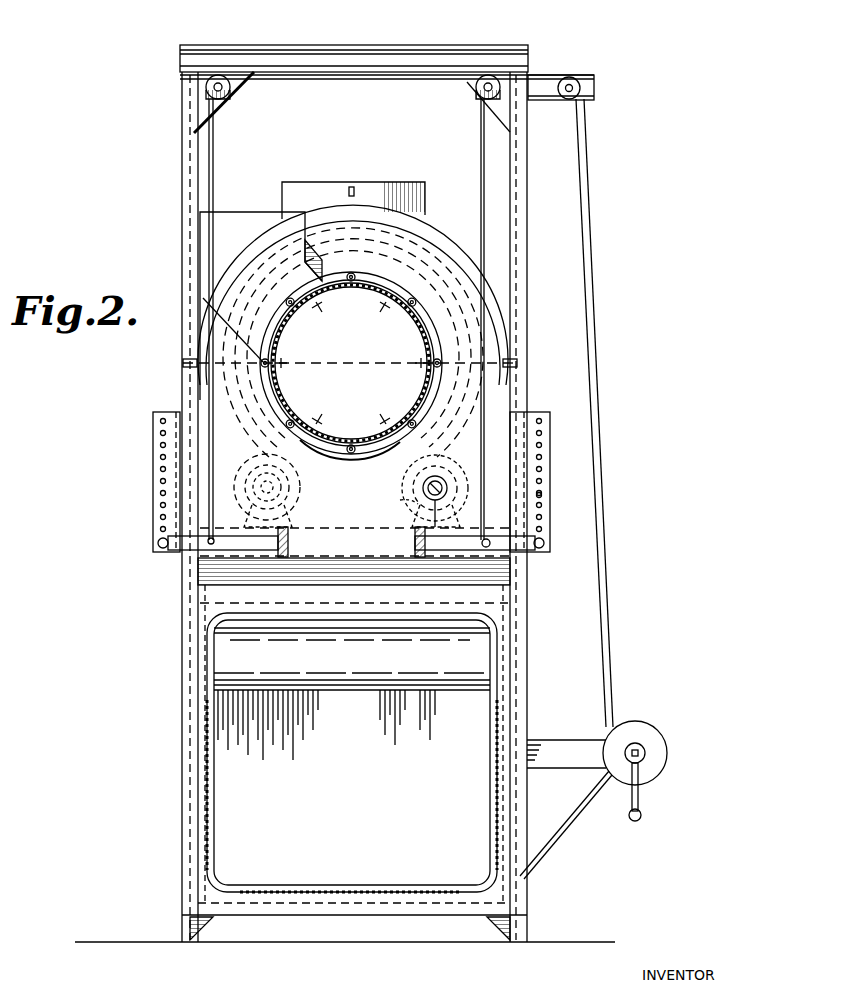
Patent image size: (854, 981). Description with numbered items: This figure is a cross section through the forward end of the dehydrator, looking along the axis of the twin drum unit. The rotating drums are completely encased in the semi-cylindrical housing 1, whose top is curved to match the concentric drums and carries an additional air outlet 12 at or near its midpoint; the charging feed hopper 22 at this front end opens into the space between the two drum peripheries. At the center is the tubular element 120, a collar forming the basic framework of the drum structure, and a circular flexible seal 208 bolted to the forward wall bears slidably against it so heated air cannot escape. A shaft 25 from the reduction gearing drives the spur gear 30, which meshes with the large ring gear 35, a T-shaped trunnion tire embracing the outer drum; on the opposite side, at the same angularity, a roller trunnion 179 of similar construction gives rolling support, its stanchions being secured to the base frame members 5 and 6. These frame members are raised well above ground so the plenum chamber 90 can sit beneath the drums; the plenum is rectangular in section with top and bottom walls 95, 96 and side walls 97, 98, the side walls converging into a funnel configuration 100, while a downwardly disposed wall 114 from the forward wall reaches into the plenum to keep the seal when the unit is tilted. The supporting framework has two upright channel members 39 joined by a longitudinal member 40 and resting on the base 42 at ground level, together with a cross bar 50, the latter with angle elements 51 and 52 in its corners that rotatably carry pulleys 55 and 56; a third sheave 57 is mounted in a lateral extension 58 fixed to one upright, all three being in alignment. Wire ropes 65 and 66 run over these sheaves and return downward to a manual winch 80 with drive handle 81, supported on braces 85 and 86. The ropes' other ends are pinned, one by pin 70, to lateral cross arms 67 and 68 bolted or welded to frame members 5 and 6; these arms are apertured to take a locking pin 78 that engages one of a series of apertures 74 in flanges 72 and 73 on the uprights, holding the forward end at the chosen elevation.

The housing 1 is at (435, 242).
The frame member 5 is at (414, 545).
The frame member 6 is at (289, 545).
The air outlet 12 is at (321, 181).
The charging feed hopper 22 is at (246, 238).
The shaft 25 is at (442, 486).
The spur gear 30 is at (450, 468).
The ring gear 35 is at (395, 507).
The upright channel member 39 is at (181, 170).
The longitudinal member 40 is at (520, 588).
The base 42 is at (345, 917).
The cross bar 50 is at (352, 46).
The angle element 51 is at (226, 101).
The angle element 52 is at (470, 88).
The pulley 55 is at (232, 92).
The pulley 56 is at (492, 100).
The sheave 57 is at (573, 77).
The lateral extension 58 is at (596, 95).
The wire rope 65 is at (214, 170).
The wire rope 66 is at (480, 163).
The cross arm 67 is at (252, 551).
The cross arm 68 is at (212, 538).
The pin 70 is at (486, 539).
The flange 72 is at (153, 432).
The flange 73 is at (550, 425).
The aperture 74 is at (542, 495).
The locking pin 78 is at (545, 543).
The manual winch 80 is at (650, 733).
The drive handle 81 is at (641, 804).
The brace 85 is at (560, 739).
The brace 86 is at (562, 838).
The plenum chamber 90 is at (232, 672).
The top wall 95 is at (308, 602).
The bottom wall 96 is at (287, 890).
The side wall 97 is at (214, 778).
The side wall 98 is at (495, 795).
The funnel configuration 100 is at (207, 818).
The downwardly disposed wall 114 is at (414, 680).
The tubular element 120 is at (378, 294).
The roller trunnion 179 is at (290, 500).
The seal 208 is at (318, 448).